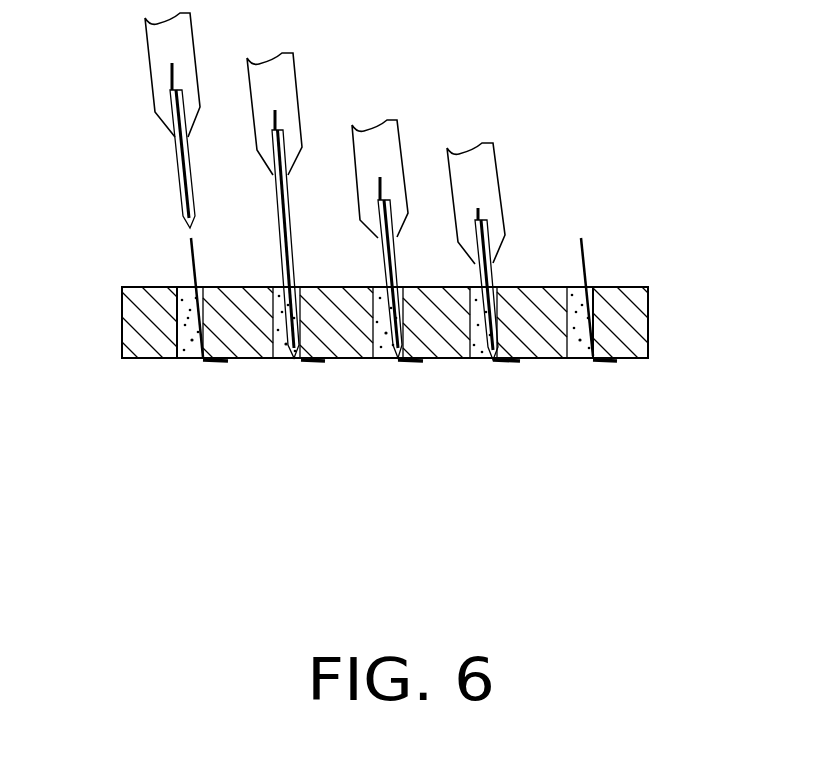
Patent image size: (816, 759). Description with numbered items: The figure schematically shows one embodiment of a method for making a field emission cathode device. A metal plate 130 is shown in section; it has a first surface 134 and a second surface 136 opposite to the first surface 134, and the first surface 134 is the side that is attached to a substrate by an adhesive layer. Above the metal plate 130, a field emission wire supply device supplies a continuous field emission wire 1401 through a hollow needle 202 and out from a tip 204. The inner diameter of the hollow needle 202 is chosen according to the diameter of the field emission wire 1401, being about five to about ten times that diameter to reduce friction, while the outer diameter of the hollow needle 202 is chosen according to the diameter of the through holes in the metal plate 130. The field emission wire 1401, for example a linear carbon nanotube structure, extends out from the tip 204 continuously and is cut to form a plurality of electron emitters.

The metal plate 130 is at (622, 330).
The first surface 134 is at (165, 360).
The second surface 136 is at (622, 287).
The hollow needle 202 is at (482, 173).
The tip 204 is at (493, 277).
The field emission wire 1401 is at (380, 177).